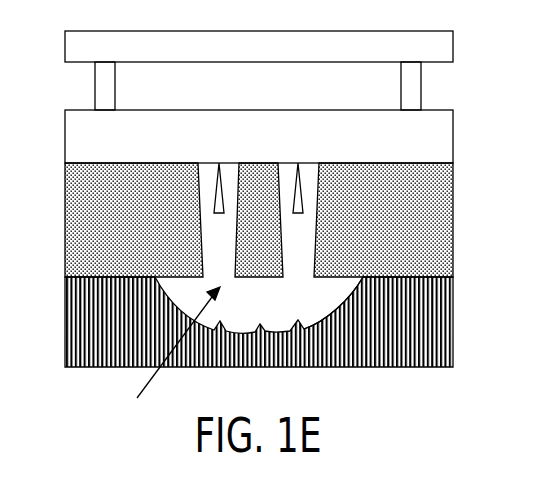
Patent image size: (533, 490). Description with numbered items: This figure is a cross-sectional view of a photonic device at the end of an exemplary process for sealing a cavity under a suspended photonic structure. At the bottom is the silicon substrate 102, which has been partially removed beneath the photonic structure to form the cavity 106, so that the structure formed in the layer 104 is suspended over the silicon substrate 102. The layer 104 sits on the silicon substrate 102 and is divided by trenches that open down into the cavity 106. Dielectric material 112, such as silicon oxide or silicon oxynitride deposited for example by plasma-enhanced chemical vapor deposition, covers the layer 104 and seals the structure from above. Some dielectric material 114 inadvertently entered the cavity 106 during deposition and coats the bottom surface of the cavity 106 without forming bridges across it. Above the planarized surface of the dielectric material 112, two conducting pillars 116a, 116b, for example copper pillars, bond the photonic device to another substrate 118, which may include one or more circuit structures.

The substrate 118 is at (440, 49).
The conducting pillar 116a is at (105, 97).
The conducting pillar 116b is at (412, 97).
The dielectric material 112 is at (438, 133).
The layer 104 is at (435, 210).
The dielectric material 114 is at (302, 327).
The silicon substrate 102 is at (437, 327).
The cavity 106 is at (172, 355).